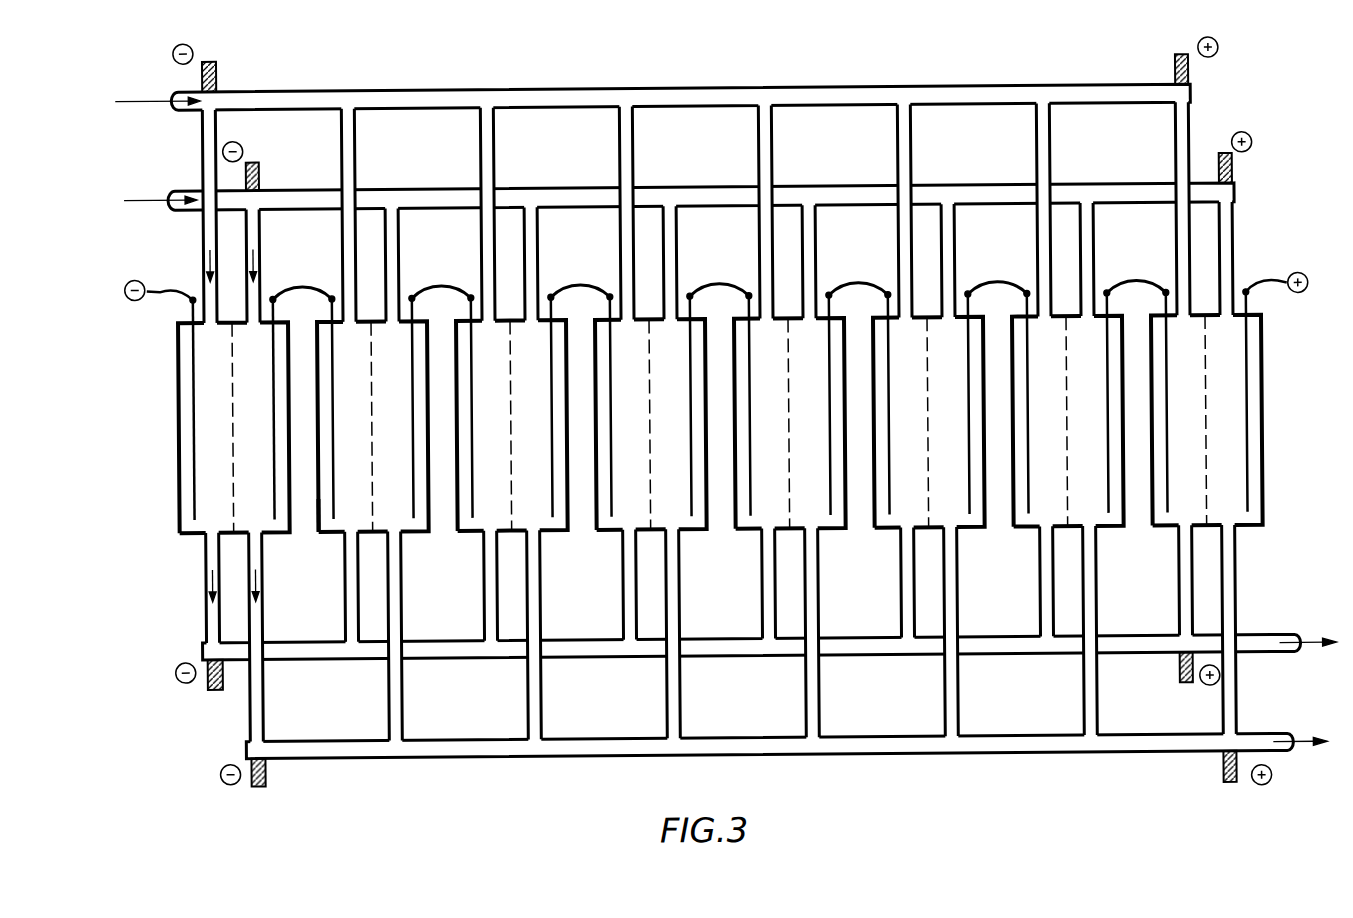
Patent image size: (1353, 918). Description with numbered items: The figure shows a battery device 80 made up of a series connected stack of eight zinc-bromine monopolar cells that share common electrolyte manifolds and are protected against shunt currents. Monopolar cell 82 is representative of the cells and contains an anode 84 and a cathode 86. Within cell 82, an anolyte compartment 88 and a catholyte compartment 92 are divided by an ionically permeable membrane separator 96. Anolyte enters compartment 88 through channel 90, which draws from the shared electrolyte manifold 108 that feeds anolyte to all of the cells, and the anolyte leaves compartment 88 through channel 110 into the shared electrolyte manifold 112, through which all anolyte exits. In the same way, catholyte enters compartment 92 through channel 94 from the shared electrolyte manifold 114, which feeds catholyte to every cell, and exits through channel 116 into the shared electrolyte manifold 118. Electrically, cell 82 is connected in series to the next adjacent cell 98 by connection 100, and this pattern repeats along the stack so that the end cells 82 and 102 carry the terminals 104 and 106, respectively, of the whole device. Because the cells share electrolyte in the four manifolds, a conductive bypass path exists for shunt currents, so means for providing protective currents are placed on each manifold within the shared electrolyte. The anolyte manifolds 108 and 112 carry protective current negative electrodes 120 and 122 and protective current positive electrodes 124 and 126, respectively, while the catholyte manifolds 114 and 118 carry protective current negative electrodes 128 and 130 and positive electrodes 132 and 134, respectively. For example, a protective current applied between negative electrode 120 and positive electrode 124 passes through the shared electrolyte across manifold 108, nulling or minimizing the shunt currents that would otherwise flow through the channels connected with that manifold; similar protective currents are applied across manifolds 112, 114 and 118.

The battery device 80 is at (720, 80).
The monopolar cell 82 is at (177, 422).
The anode 84 is at (190, 360).
The cathode 86 is at (273, 365).
The compartment 88 is at (207, 461).
The channel 90 is at (204, 234).
The compartment 92 is at (253, 460).
The channel 94 is at (263, 230).
The ionically permeable membrane separator 96 is at (230, 378).
The next adjacent cell 98 is at (317, 520).
The connection 100 is at (288, 293).
The end cell 102 is at (1263, 488).
The terminal 104 is at (168, 297).
The terminal 106 is at (1266, 292).
The shared electrolyte manifold 108 is at (441, 93).
The channel 110 is at (203, 571).
The shared electrolyte manifold 112 is at (605, 662).
The shared electrolyte manifold 114 is at (410, 194).
The channel 116 is at (263, 623).
The shared electrolyte manifold 118 is at (443, 762).
The protective current negative electrode 120 is at (220, 72).
The protective current negative electrode 122 is at (203, 685).
The protective current positive electrode 124 is at (1192, 79).
The protective current positive electrode 126 is at (1176, 680).
The protective current negative electrode 128 is at (262, 178).
The protective current negative electrode 130 is at (252, 792).
The positive electrode 132 is at (1234, 181).
The positive electrode 134 is at (1235, 790).